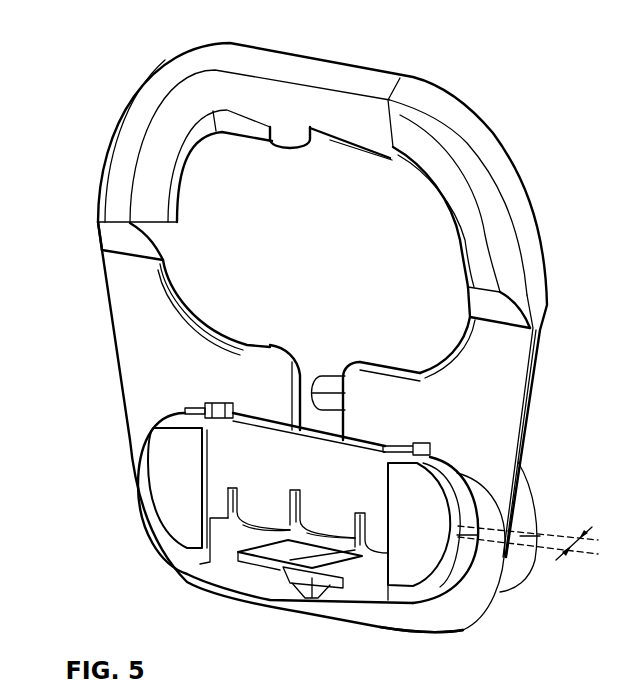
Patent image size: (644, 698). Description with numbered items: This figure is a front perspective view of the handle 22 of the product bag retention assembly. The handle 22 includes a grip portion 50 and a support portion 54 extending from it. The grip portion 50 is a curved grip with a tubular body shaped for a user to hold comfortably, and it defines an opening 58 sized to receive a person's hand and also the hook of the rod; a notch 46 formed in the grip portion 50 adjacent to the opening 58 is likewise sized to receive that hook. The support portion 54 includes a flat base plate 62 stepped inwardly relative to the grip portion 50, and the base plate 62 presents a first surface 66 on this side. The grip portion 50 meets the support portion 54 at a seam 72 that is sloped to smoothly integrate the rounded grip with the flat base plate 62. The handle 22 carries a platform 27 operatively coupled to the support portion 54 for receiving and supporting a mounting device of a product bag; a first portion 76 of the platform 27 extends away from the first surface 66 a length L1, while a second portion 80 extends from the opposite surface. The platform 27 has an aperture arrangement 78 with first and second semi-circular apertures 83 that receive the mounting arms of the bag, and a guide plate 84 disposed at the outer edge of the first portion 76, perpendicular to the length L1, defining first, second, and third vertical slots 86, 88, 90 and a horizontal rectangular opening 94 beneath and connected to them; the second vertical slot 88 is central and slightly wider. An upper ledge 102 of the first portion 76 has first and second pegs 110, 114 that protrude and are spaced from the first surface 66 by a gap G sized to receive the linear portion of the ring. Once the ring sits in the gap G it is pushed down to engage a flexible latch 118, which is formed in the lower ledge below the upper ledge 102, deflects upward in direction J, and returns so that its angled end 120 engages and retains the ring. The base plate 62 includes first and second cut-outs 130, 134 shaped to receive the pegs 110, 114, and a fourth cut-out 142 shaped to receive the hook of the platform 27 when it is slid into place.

The handle 22 is at (498, 70).
The platform 27 is at (148, 450).
The notch 46 is at (313, 140).
The grip portion 50 is at (497, 187).
The support portion 54 is at (123, 313).
The opening 58 is at (230, 182).
The base plate 62 is at (502, 387).
The first surface 66 is at (462, 413).
The seam 72 is at (110, 240).
The first portion 76 is at (470, 577).
The aperture arrangement 78 is at (178, 505).
The second portion 80 is at (538, 500).
The semi-circular apertures 83 is at (160, 478).
The guide plate 84 is at (225, 453).
The first vertical slot 86 is at (258, 460).
The second vertical slot 88 is at (322, 430).
The third vertical slot 90 is at (378, 440).
The horizontal rectangular opening 94 is at (257, 537).
The upper ledge 102 is at (328, 440).
The first peg 110 is at (190, 406).
The second peg 114 is at (402, 444).
The flexible latch 118 is at (287, 575).
The angled end 120 is at (317, 580).
The first cut-out 130 is at (212, 405).
The second cut-out 134 is at (428, 447).
The fourth cut-out 142 is at (293, 363).
The gap G is at (227, 405).
The direction J is at (300, 596).
The length L1 is at (569, 550).